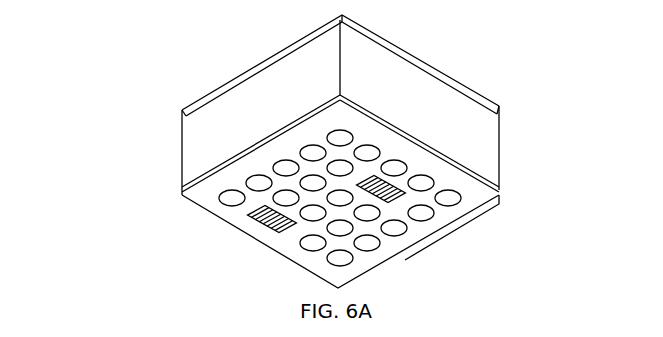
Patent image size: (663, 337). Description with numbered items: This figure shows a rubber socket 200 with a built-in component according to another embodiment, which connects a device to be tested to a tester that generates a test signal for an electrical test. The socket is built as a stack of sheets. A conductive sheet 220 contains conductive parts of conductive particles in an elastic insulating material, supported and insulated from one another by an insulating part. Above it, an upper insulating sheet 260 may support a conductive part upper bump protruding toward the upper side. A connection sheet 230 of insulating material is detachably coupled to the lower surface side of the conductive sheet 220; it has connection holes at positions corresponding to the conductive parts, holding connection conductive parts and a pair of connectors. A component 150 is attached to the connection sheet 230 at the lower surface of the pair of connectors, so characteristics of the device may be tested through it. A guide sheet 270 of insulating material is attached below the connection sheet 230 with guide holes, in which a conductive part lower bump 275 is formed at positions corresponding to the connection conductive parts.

The rubber socket 200 is at (126, 139).
The conductive sheet 220 is at (493, 130).
The upper insulating sheet 260 is at (472, 92).
The connection sheet 230 is at (500, 185).
The guide sheet 270 is at (500, 205).
The component 150 is at (268, 245).
The conductive part lower bump 275 is at (420, 222).